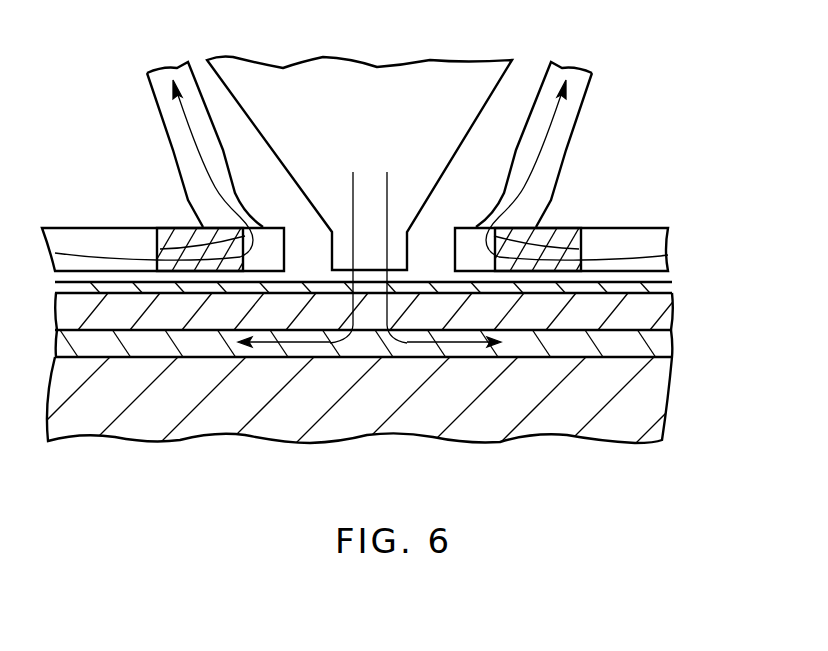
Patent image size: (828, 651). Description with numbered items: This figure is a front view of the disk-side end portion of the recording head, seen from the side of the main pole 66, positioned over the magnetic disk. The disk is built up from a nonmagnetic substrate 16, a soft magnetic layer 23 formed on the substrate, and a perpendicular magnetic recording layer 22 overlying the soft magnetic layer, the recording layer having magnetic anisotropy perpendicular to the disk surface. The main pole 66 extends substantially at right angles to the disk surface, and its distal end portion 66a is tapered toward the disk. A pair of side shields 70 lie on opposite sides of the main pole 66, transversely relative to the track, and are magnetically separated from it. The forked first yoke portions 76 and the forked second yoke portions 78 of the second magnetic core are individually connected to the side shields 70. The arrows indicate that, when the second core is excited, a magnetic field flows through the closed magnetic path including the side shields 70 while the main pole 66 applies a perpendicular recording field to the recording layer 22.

The substrate 16 is at (647, 403).
The perpendicular magnetic recording layer 22 is at (665, 313).
The soft magnetic layer 23 is at (652, 343).
The main pole 66 is at (465, 68).
The distal end portion 66a is at (397, 265).
The side shields 70 is at (110, 237).
The first yoke portions 76 is at (178, 159).
The second yoke portions 78 is at (163, 235).